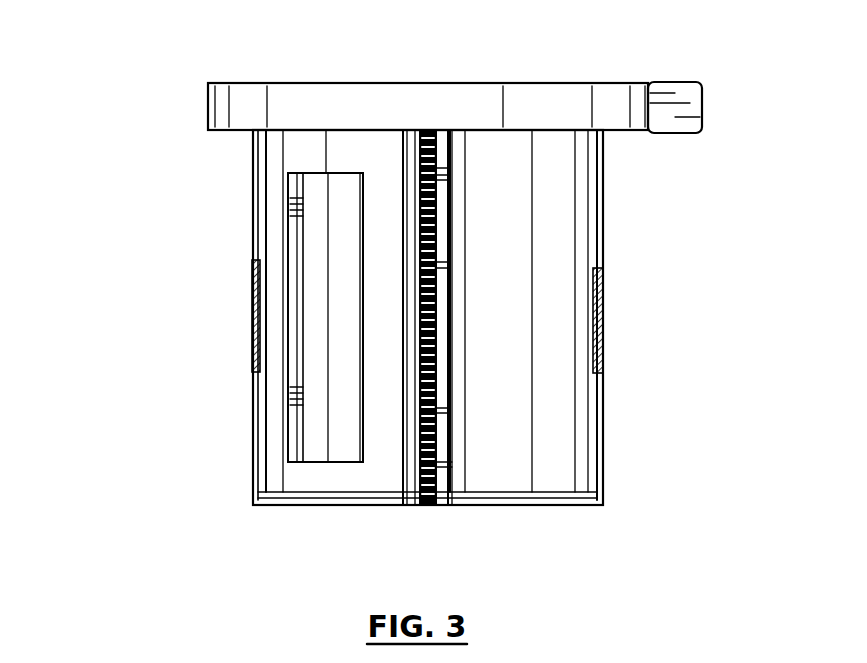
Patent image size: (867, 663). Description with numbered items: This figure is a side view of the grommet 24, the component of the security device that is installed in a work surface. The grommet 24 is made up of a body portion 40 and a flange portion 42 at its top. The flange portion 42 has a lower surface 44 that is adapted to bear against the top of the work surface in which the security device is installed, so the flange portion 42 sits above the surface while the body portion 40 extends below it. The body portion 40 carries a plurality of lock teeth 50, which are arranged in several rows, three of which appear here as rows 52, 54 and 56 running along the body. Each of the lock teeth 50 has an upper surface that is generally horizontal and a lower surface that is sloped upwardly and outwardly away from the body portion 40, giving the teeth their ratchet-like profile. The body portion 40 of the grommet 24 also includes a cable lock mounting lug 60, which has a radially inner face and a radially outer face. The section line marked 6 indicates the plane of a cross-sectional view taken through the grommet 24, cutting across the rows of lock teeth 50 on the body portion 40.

The grommet 24 is at (160, 206).
The body portion 40 is at (563, 213).
The flange portion 42 is at (618, 98).
The lower surface 44 is at (637, 135).
The lock teeth 50 is at (252, 278).
The row of lock teeth 52 is at (250, 323).
The row of lock teeth 54 is at (427, 505).
The row of lock teeth 56 is at (600, 355).
The cable lock mounting lug 60 is at (313, 390).
The section line 6- 6 is at (247, 312).